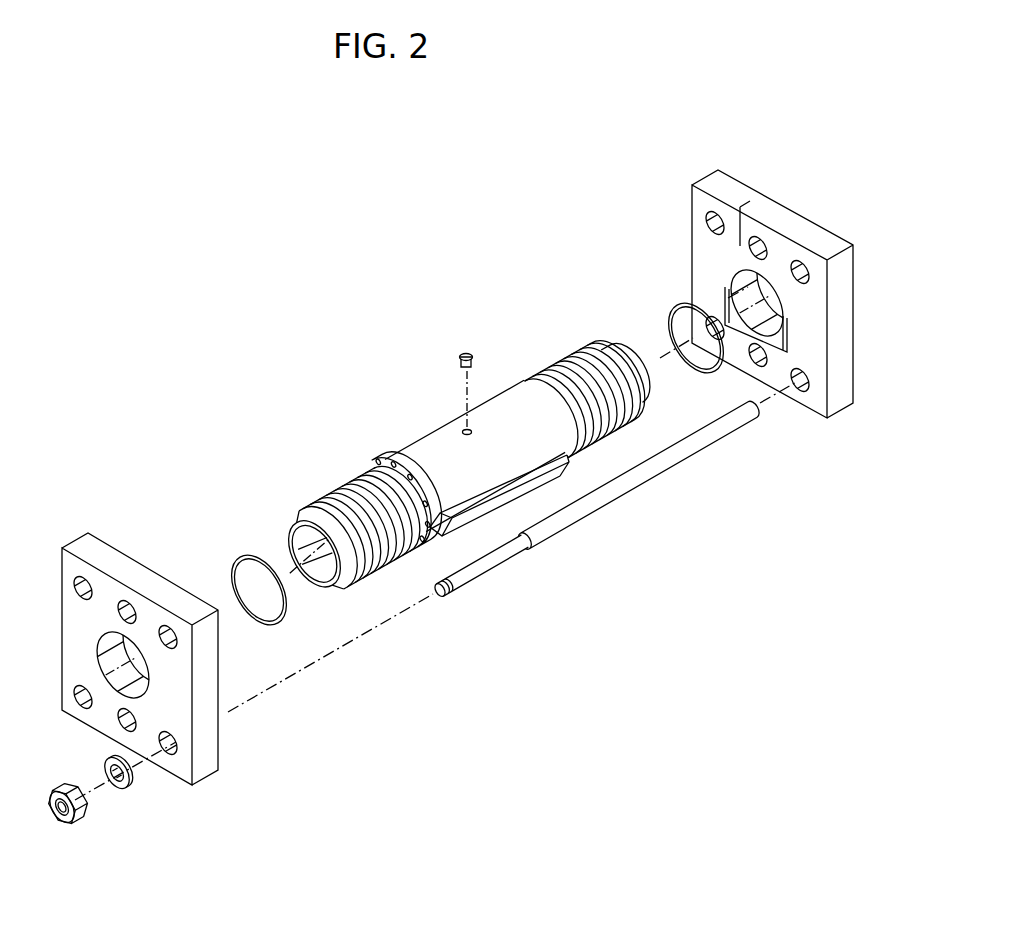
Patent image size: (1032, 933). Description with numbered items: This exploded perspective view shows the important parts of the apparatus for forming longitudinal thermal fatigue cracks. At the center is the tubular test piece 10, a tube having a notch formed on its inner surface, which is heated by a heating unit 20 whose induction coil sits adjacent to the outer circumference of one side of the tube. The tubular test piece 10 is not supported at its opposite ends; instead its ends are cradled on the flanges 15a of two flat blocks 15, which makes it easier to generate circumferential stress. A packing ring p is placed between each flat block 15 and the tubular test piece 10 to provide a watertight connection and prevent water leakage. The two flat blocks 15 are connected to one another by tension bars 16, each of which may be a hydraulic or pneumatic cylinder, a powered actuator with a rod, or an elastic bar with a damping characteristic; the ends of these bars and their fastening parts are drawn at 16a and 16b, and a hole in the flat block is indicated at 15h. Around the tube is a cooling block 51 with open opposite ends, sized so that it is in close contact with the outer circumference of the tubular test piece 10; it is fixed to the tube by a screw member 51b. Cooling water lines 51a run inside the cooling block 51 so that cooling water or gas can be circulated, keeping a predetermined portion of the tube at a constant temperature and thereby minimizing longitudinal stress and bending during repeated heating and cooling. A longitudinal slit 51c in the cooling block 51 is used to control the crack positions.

The flat block 15 is at (762, 260).
The bolt hole 15h is at (708, 225).
The flange 15a is at (787, 346).
The packing ring p is at (679, 308).
The tubular test piece 10 is at (606, 344).
The screw member 51b is at (462, 352).
The cooling block 51 is at (424, 456).
The cooling water line 51a is at (374, 468).
The heating unit 20 is at (321, 497).
The tension bar 16 is at (597, 524).
The longitudinal slit 51c is at (463, 510).
The rod end 16a is at (456, 598).
The nut 16b is at (78, 806).